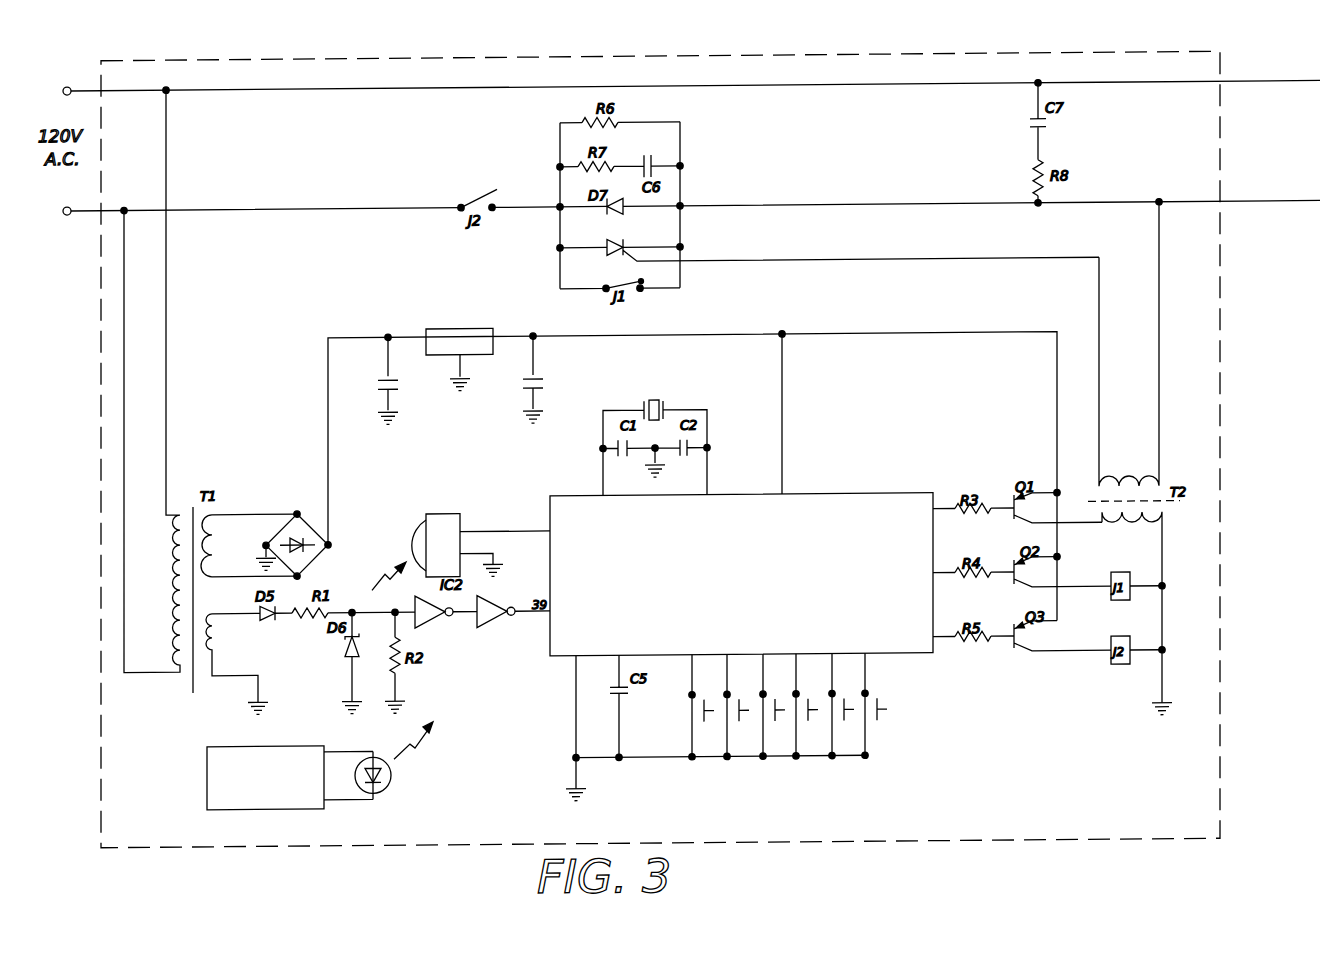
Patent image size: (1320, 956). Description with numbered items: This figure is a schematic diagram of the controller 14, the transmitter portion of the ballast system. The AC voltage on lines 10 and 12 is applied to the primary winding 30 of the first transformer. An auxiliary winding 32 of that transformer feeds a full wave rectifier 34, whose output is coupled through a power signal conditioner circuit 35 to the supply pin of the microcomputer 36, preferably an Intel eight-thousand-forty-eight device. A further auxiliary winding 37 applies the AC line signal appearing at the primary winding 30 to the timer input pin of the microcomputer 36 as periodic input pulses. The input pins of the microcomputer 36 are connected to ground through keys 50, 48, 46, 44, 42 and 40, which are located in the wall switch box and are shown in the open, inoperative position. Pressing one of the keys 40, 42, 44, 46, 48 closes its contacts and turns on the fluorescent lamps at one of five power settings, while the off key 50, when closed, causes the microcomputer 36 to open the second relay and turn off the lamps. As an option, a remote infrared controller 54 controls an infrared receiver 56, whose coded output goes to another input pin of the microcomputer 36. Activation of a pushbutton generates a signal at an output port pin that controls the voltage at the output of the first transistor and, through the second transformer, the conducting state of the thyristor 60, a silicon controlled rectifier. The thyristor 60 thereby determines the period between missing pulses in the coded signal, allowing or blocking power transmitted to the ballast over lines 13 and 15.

The line 10 is at (120, 206).
The line 12 is at (121, 86).
The line 13 is at (1262, 73).
The controller 14 is at (1105, 843).
The line 15 is at (1272, 206).
The primary winding 30 is at (158, 566).
The auxiliary winding 32 is at (232, 524).
The full wave rectifier 34 is at (307, 524).
The power signal conditioner circuit 35 is at (694, 323).
The microcomputer 36 is at (550, 644).
The auxiliary winding 37 is at (232, 641).
The key 40 is at (690, 723).
The key 42 is at (727, 723).
The key 44 is at (763, 723).
The key 46 is at (796, 723).
The key 48 is at (832, 723).
The off key 50 is at (865, 723).
The remote infrared controller 54 is at (207, 758).
The infrared receiver 56 is at (449, 512).
The thyristor 60 is at (626, 241).